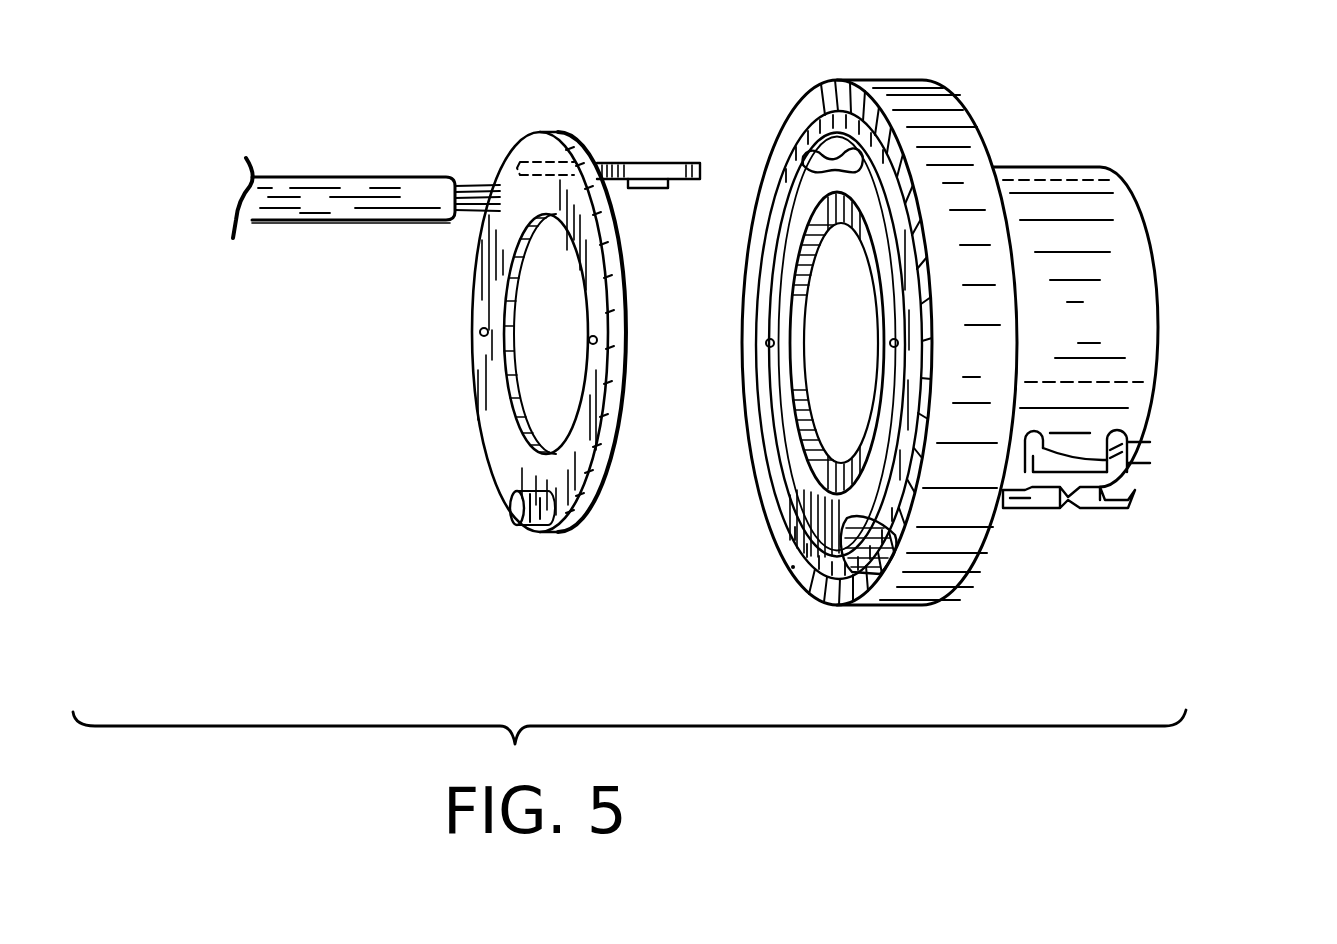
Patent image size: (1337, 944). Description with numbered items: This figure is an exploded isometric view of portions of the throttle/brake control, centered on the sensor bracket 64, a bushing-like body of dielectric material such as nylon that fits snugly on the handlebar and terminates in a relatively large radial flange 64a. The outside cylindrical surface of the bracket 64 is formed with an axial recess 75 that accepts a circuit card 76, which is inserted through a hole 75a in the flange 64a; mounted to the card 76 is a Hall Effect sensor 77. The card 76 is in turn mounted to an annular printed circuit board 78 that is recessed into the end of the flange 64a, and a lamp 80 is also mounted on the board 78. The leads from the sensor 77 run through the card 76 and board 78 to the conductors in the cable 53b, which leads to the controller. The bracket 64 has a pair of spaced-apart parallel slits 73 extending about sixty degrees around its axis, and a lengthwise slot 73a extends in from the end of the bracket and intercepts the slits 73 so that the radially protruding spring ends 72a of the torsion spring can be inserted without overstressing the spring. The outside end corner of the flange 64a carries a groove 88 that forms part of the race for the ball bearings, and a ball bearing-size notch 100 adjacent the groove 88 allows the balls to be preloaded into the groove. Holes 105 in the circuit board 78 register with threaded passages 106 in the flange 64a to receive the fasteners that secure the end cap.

The cable 53b is at (333, 195).
The sensor bracket 64 is at (1218, 246).
The radial flange 64a is at (917, 590).
The spring ends 72a is at (1119, 440).
The slits 73 is at (1128, 463).
The lengthwise slot 73a is at (1061, 510).
The axial recess 75 is at (1033, 178).
The hole 75a is at (826, 152).
The circuit card 76 is at (616, 164).
The Hall Effect sensor 77 is at (660, 178).
The annular printed circuit board 78 is at (487, 432).
The lamp 80 is at (512, 518).
The groove 88 is at (884, 112).
The notch 100 is at (803, 571).
The holes 105 is at (590, 340).
The threaded passages 106 is at (890, 343).